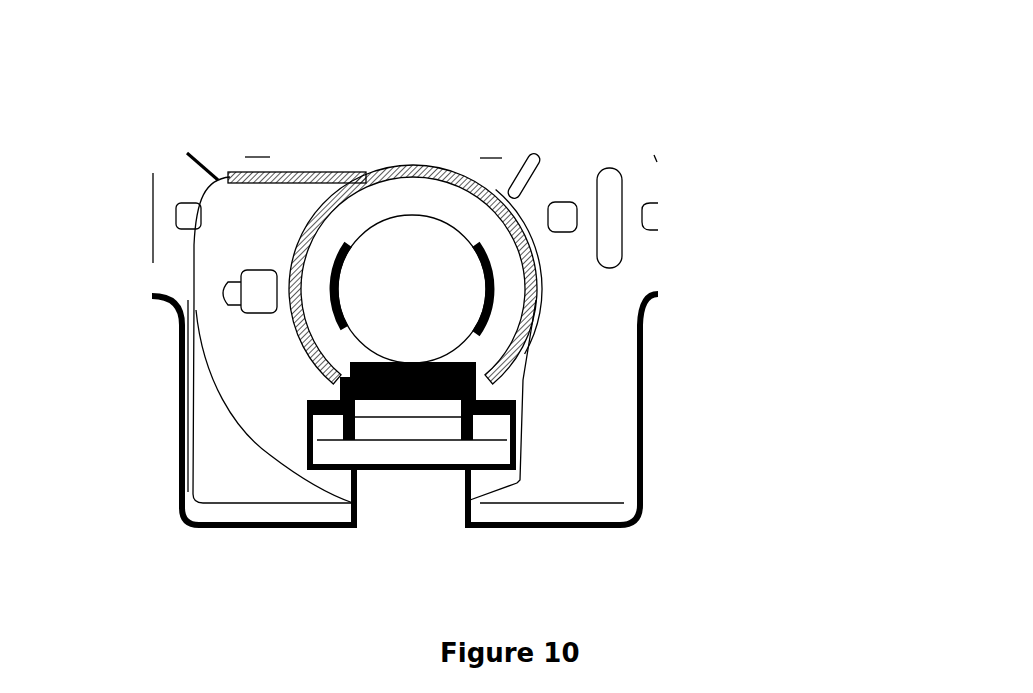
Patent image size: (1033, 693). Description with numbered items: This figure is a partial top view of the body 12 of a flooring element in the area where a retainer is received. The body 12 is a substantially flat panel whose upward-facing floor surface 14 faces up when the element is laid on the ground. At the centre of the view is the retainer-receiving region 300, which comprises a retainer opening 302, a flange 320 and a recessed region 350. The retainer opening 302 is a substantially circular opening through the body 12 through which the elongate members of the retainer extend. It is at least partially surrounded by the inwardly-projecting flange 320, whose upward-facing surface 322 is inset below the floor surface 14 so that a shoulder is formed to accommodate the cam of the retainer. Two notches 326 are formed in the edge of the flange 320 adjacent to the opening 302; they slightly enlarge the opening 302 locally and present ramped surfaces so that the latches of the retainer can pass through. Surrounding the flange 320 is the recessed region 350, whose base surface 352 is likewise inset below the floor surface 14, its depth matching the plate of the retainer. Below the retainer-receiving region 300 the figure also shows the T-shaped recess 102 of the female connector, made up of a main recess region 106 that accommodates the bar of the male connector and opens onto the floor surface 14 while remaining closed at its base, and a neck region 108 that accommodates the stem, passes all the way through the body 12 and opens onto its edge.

The body 12 is at (590, 528).
The floor surface 14 is at (585, 377).
The recess 102 is at (307, 447).
The main recess region 106 is at (343, 457).
The neck region 108 is at (400, 503).
The retainer-receiving region 300 is at (303, 340).
The retainer opening 302 is at (447, 250).
The flange 320 is at (507, 287).
The upward-facing surface 322 is at (492, 235).
The notches 326 is at (483, 290).
The recessed region 350 is at (240, 183).
The base surface 352 is at (227, 350).